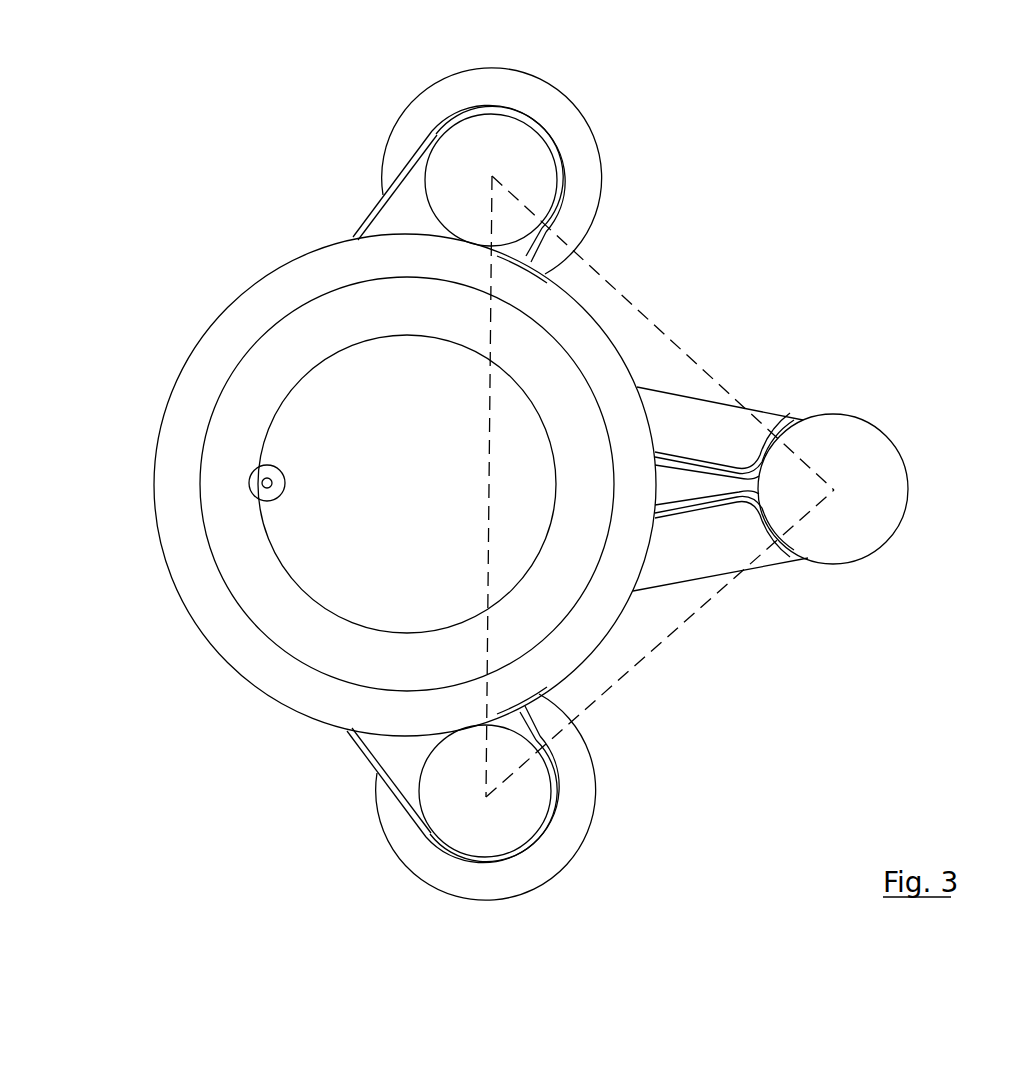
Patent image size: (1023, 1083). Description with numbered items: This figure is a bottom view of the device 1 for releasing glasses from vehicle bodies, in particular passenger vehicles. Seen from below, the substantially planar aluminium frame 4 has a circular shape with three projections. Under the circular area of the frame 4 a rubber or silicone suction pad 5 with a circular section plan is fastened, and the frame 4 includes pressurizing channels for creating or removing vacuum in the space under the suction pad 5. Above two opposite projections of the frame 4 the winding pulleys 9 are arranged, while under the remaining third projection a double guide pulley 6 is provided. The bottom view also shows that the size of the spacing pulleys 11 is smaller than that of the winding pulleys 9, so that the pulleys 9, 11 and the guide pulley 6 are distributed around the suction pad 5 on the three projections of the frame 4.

The device 1 is at (243, 195).
The frame 4 is at (693, 560).
The suction pad 5 is at (177, 460).
The double guide pulley 6 is at (880, 432).
The winding pulleys 9 is at (583, 175).
The spacing pulleys 11 is at (503, 157).